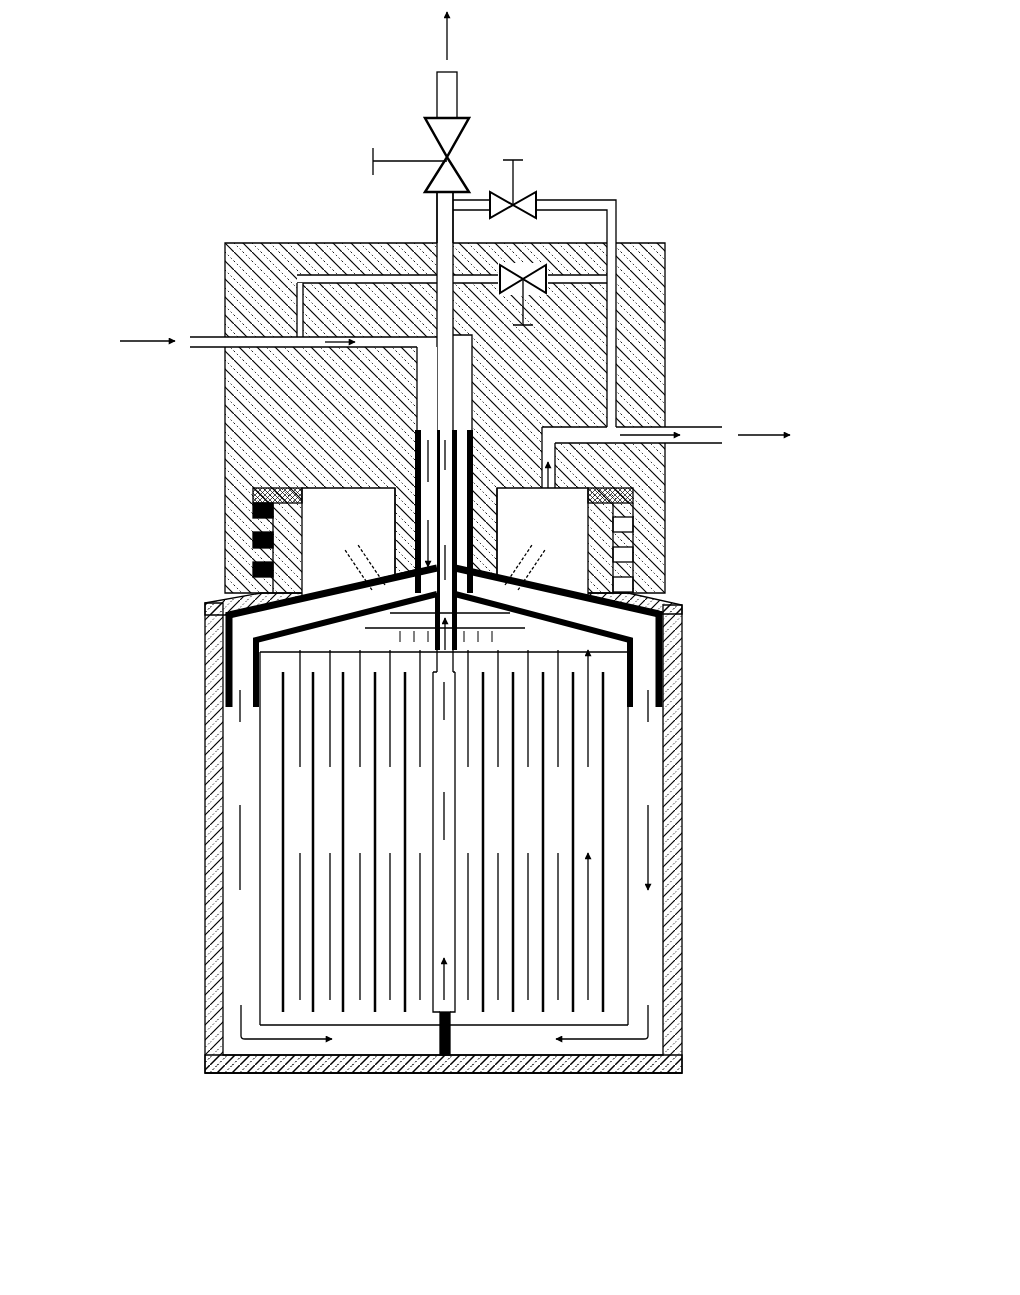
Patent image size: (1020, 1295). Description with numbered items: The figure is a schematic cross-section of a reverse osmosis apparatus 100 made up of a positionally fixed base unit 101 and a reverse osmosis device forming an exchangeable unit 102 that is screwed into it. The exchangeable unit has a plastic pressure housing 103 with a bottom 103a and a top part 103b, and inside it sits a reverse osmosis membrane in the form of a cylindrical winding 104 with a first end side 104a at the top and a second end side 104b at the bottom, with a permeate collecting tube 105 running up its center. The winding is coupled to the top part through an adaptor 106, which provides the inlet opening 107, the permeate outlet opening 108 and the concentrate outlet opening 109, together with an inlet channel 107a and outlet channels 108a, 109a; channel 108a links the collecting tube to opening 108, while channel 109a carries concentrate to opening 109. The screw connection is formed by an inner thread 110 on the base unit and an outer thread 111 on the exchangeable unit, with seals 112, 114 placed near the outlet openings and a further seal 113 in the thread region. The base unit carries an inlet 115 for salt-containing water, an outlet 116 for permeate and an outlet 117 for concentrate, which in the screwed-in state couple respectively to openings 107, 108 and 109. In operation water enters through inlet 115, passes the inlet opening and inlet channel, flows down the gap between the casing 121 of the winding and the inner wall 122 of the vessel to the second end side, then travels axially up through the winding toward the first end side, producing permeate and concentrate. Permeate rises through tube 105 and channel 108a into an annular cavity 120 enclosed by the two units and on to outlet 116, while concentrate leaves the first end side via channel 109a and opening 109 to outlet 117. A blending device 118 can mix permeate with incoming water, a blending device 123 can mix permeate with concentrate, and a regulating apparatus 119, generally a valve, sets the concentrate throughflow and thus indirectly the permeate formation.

The apparatus 100 is at (208, 134).
The base unit 101 is at (668, 242).
The exchangeable unit 102 is at (686, 1075).
The pressure housing 103 is at (684, 903).
The bottom 103a is at (194, 1052).
The top part 103b is at (134, 426).
The cylindrical winding 104 is at (550, 765).
The first end side 104a is at (638, 640).
The second end side 104b is at (584, 1027).
The permeate collecting tube 105 is at (456, 960).
The adaptor 106 is at (224, 678).
The inlet opening 107 is at (400, 436).
The inlet channel 107a is at (252, 492).
The outlet opening 108 is at (598, 572).
The outlet channel 108a is at (214, 608).
The outlet opening 109 is at (458, 430).
The outlet channel 109a is at (424, 440).
The inner thread 110 is at (636, 583).
The outer thread 111 is at (248, 570).
The seal 112 is at (427, 506).
The seal 113 is at (637, 496).
The seal 114 is at (554, 448).
The inlet 115 is at (200, 335).
The outlet 116 is at (696, 438).
The outlet 117 is at (459, 95).
The blending device 118 is at (523, 264).
The regulating apparatus 119 is at (457, 158).
The annular cavity 120 is at (445, 543).
The casing 121 is at (256, 977).
The inner wall 122 is at (237, 790).
The blending device 123 is at (540, 189).